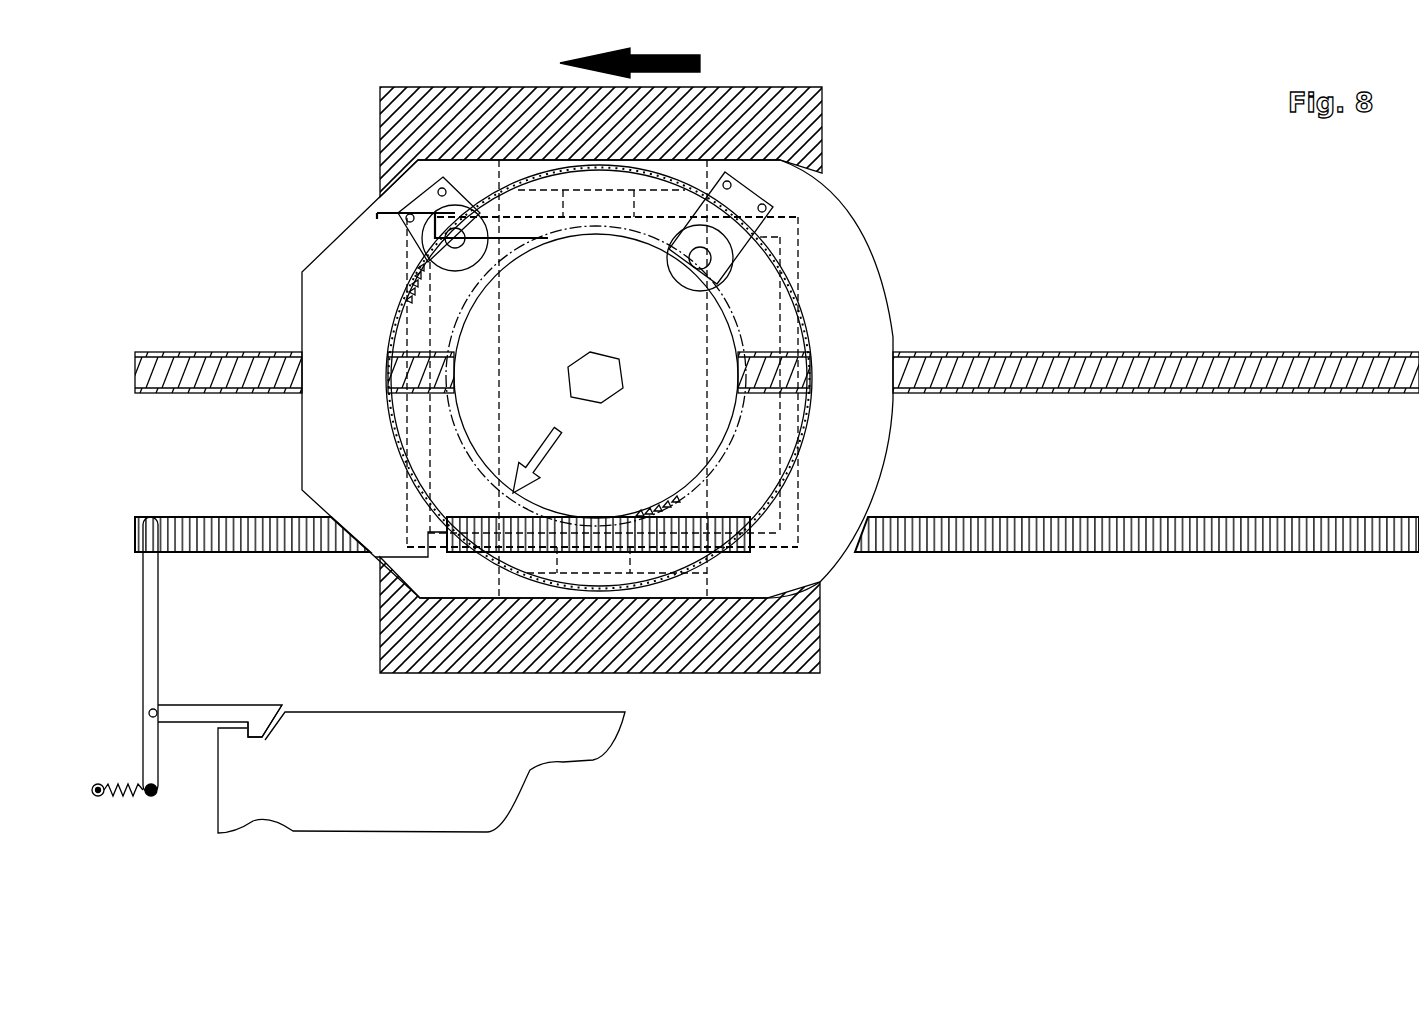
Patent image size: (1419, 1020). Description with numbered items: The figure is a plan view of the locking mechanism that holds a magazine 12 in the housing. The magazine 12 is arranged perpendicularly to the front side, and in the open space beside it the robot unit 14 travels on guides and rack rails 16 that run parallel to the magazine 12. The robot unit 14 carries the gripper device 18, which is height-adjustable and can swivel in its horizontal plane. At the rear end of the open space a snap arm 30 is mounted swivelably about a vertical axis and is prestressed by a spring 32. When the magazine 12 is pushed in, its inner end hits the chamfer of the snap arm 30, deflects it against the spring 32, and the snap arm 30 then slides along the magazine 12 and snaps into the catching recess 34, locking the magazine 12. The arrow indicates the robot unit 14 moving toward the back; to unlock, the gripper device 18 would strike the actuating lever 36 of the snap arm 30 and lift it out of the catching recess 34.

The magazine 12 is at (565, 744).
The robot unit 14 is at (812, 138).
The guides and rack rails 16 is at (777, 452).
The gripper device 18 is at (848, 249).
The snap arm 30 is at (212, 712).
The spring 32 is at (128, 798).
The catching recess 34 is at (265, 742).
The actuating lever 36 is at (152, 597).